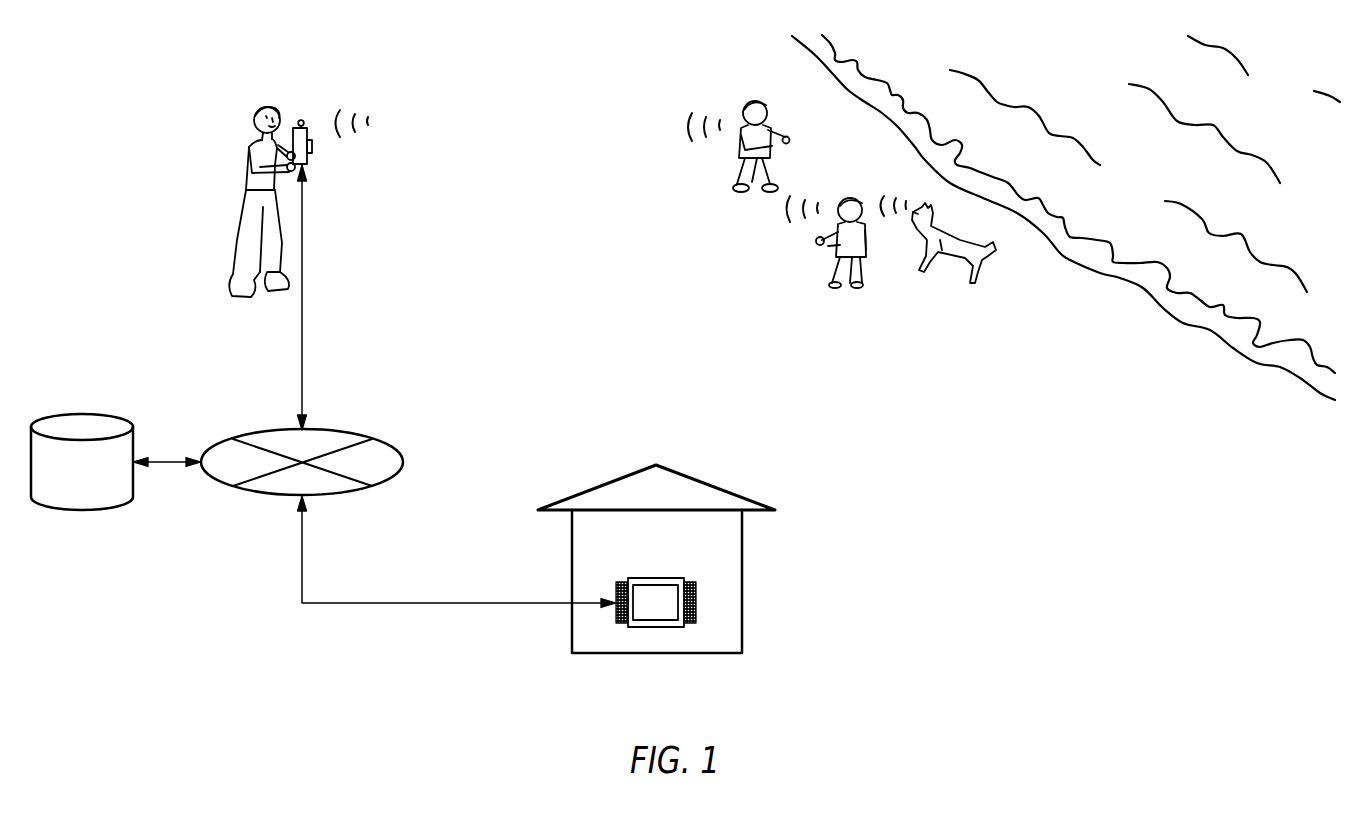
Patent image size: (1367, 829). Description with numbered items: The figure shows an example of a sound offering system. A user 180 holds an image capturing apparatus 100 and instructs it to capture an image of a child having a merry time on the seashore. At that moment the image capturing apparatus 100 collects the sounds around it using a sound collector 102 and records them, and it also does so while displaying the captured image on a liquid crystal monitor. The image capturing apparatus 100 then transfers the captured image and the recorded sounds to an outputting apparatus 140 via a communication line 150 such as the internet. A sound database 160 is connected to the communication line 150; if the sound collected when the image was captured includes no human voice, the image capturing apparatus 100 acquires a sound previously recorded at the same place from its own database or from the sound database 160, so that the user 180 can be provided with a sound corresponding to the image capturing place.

The image capturing apparatus 100 is at (310, 158).
The sound collector 102 is at (301, 120).
The outputting apparatus 140 is at (670, 578).
The communication line 150 is at (385, 440).
The sound database 160 is at (78, 412).
The user 180 is at (247, 152).